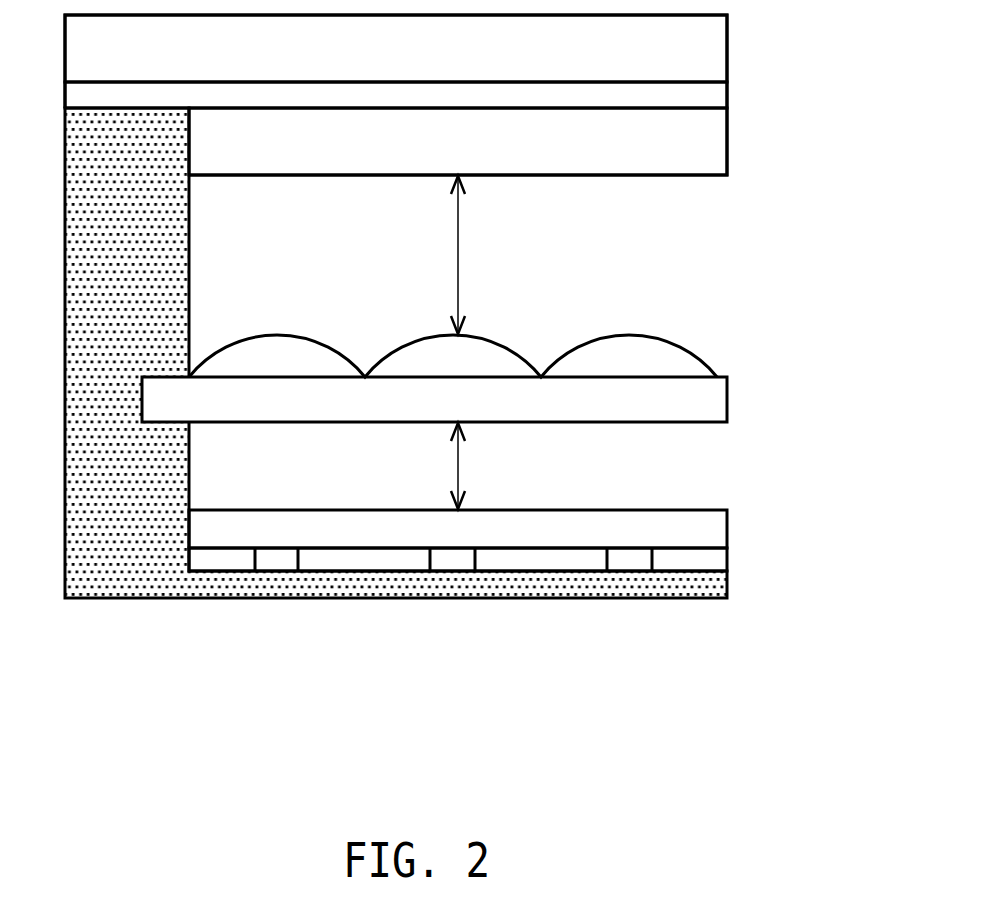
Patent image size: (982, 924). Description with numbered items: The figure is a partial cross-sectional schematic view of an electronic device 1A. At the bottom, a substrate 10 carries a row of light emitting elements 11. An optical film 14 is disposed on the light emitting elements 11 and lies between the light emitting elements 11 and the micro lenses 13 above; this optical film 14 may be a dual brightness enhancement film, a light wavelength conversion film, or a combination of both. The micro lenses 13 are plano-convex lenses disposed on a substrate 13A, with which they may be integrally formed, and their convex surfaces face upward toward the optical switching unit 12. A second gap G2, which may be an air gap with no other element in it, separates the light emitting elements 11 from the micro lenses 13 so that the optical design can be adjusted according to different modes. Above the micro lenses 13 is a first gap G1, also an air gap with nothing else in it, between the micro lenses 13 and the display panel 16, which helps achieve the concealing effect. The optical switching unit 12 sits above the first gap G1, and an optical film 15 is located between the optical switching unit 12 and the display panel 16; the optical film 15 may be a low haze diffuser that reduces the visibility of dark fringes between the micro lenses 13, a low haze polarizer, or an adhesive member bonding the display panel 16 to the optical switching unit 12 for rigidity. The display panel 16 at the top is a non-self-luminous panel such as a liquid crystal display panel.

The electronic device 1A is at (438, 375).
The substrate 10 is at (693, 587).
The light emitting elements 11 is at (632, 562).
The optical switching unit 12 is at (693, 145).
The micro lenses 13 is at (680, 362).
The substrate 13A is at (693, 402).
The optical film 14 is at (693, 523).
The optical film 15 is at (693, 97).
The display panel 16 is at (693, 50).
The first gap G1 is at (477, 255).
The second gap G2 is at (477, 466).